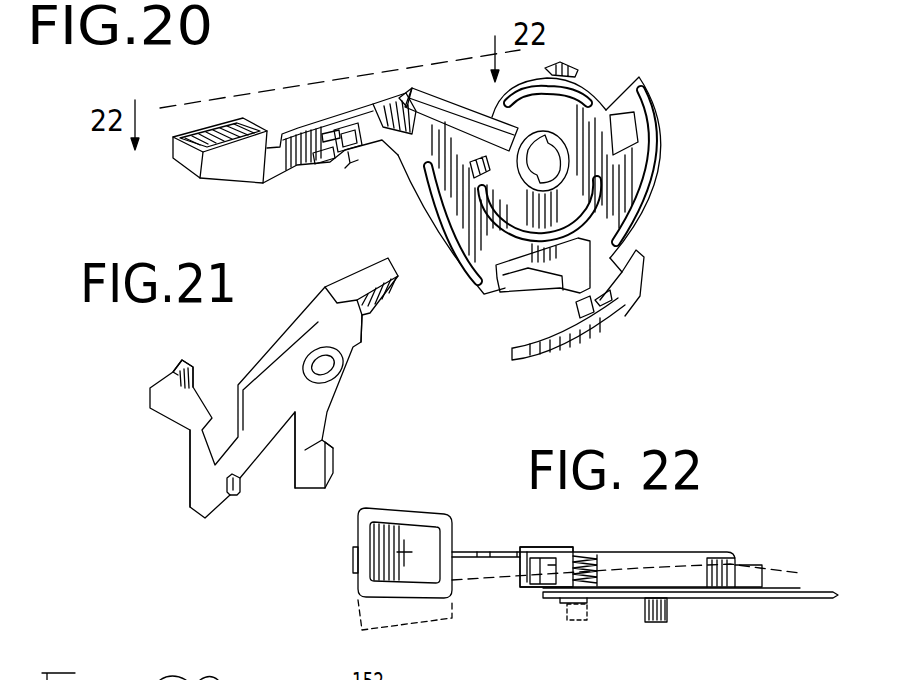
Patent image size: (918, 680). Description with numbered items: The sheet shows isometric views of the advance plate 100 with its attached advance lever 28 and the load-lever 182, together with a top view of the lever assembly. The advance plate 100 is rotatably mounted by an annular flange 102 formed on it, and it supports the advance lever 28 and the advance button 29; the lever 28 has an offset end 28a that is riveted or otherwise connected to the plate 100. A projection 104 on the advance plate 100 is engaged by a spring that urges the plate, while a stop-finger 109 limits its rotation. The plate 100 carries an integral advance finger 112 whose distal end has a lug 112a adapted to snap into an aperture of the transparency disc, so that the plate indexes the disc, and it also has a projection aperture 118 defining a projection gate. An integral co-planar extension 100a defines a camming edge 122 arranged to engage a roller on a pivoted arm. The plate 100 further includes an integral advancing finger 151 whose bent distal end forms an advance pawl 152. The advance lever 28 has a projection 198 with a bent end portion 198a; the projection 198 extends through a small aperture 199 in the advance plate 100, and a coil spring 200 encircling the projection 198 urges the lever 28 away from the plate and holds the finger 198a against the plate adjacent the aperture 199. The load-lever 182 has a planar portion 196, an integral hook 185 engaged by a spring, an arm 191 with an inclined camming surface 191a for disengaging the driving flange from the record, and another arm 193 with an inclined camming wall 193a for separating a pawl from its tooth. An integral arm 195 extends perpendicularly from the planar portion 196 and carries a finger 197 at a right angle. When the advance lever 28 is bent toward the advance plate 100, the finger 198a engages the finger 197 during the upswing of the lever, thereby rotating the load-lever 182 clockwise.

In FIG. 20, the advance lever 28 is at (313, 127).
In FIG. 22, the advance lever 28 is at (507, 548).
In FIG. 22, the offset end 28a is at (727, 563).
In FIG. 20, the advance button 29 is at (190, 158).
In FIG. 22, the advance button 29 is at (393, 512).
In FIG. 20, the advance plate 100 is at (656, 199).
In FIG. 22, the advance plate 100 is at (625, 603).
In FIG. 20, the co-planar extension 100a is at (587, 335).
In FIG. 20, the annular flange 102 is at (548, 170).
In FIG. 20, the projection 104 is at (553, 67).
In FIG. 20, the stop-finger 109 is at (590, 305).
In FIG. 20, the advance finger 112 is at (517, 282).
In FIG. 20, the lug 112a is at (560, 284).
In FIG. 20, the projection aperture 118 is at (630, 123).
In FIG. 20, the camming edge 122 is at (632, 290).
In FIG. 20, the advancing finger 151 is at (449, 100).
In FIG. 22, the advancing finger 151 is at (723, 598).
In FIG. 20, the advance pawl 152 is at (393, 105).
In FIG. 22, the advance pawl 152 is at (667, 613).
In FIG. 21, the load-lever 182 is at (258, 349).
In FIG. 21, the hook 185 is at (243, 488).
In FIG. 21, the arm 191 is at (360, 275).
In FIG. 21, the camming surface 191a is at (372, 310).
In FIG. 21, the arm 193 is at (315, 428).
In FIG. 21, the camming wall 193a is at (313, 466).
In FIG. 21, the arm 195 is at (168, 418).
In FIG. 21, the planar portion 196 is at (290, 405).
In FIG. 21, the finger 197 is at (178, 372).
In FIG. 22, the projection 198 is at (600, 573).
In FIG. 20, the bent end portion 198a is at (360, 150).
In FIG. 22, the bent end portion 198a is at (562, 603).
In FIG. 20, the aperture 199 is at (350, 140).
In FIG. 22, the coil spring 200 is at (580, 555).